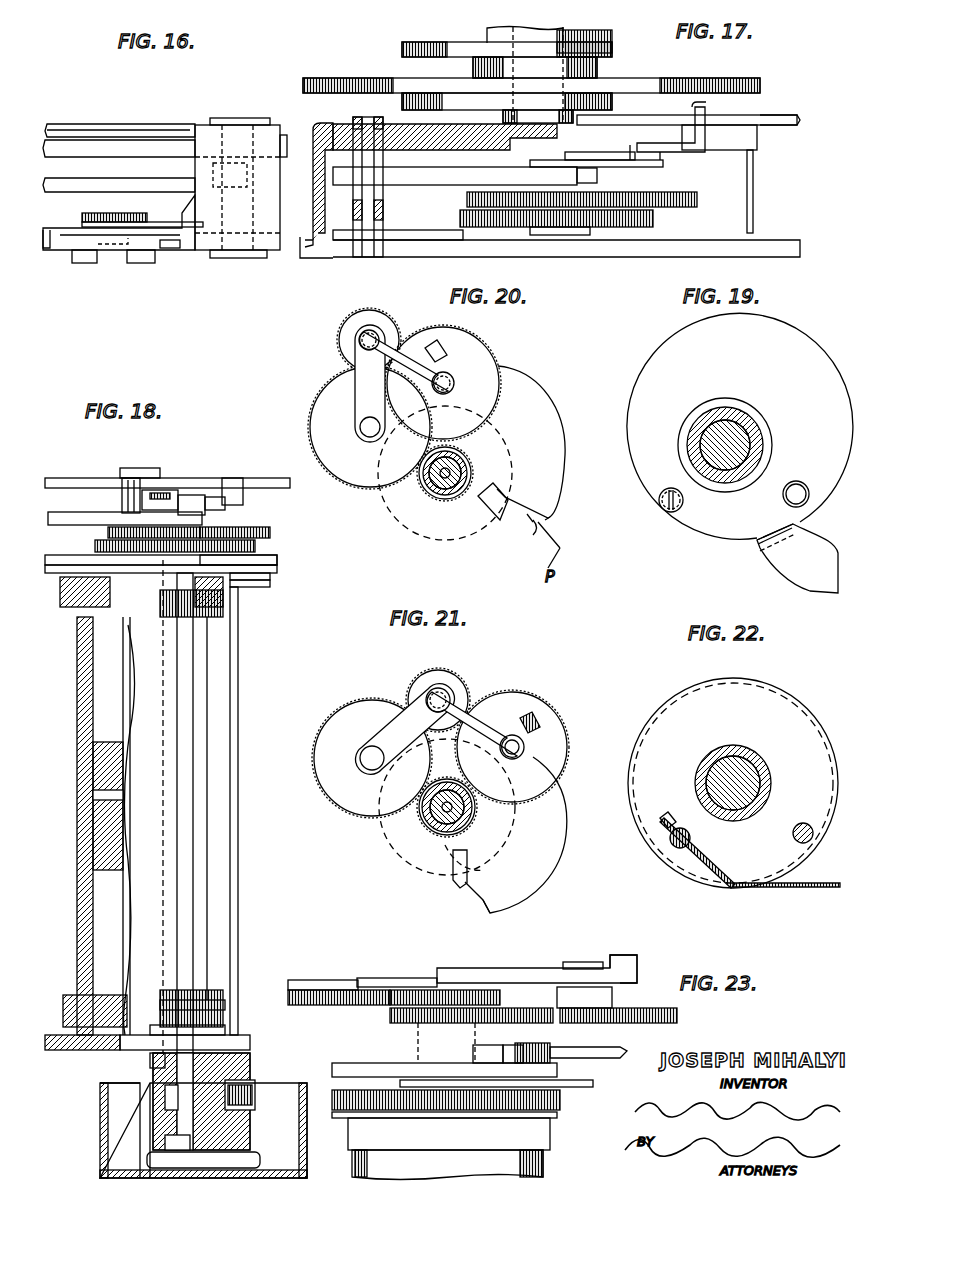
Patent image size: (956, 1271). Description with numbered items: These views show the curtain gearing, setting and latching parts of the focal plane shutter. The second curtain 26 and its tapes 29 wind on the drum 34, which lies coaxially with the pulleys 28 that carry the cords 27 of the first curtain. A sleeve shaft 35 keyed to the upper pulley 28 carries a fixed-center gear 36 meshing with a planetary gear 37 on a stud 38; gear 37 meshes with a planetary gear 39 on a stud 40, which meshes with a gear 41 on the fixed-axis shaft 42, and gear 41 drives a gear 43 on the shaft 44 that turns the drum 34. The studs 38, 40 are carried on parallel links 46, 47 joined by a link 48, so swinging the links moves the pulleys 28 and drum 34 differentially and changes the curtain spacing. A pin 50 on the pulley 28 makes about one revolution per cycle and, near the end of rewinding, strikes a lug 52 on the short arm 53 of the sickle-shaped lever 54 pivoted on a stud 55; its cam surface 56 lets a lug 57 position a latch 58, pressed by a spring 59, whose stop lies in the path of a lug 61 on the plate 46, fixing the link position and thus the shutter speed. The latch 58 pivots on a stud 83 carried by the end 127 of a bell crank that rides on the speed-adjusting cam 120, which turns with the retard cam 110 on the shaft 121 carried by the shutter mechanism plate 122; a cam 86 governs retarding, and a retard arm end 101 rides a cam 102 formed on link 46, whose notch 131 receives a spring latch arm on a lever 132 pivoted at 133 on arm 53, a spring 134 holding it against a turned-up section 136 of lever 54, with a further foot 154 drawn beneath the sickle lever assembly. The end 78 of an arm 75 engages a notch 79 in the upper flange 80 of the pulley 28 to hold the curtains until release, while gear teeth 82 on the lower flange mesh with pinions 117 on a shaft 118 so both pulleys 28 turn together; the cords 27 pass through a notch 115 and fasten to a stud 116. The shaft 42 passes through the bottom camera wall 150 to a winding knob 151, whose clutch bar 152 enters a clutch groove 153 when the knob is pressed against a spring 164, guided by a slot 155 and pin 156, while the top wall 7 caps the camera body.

In FIG. 17, the top wall 7 is at (801, 247).
In FIG. 18, the second curtain 26 is at (77, 868).
In FIG. 18, the cords 27 is at (262, 587).
In FIG. 22, the cords 27 is at (822, 889).
In FIG. 23, the cords 27 is at (594, 1083).
In FIG. 20, the pulleys 28 is at (450, 541).
In FIG. 19, the pulleys 28 is at (614, 446).
In FIG. 21, the pulleys 28 is at (390, 831).
In FIG. 22, the pulleys 28 is at (645, 818).
In FIG. 23, the pulleys 28 is at (340, 1063).
In FIG. 23, the tapes 29 is at (551, 1125).
In FIG. 18, the drum 34 is at (77, 756).
In FIG. 20, the sleeve shaft 35 is at (430, 490).
In FIG. 19, the sleeve shaft 35 is at (689, 440).
In FIG. 21, the sleeve shaft 35 is at (430, 822).
In FIG. 22, the sleeve shaft 35 is at (705, 760).
In FIG. 23, the sleeve shaft 35 is at (405, 1040).
In FIG. 20, the gear 36 is at (472, 467).
In FIG. 21, the gear 36 is at (447, 807).
In FIG. 23, the gear 36 is at (390, 1015).
In FIG. 18, the planetary gear 37 is at (240, 527).
In FIG. 20, the planetary gear 37 is at (496, 358).
In FIG. 21, the planetary gear 37 is at (546, 706).
In FIG. 23, the planetary gear 37 is at (678, 1012).
In FIG. 20, the stud 38 is at (456, 379).
In FIG. 21, the stud 38 is at (525, 745).
In FIG. 23, the stud 38 is at (585, 962).
In FIG. 20, the planetary gear 39 is at (338, 350).
In FIG. 21, the planetary gear 39 is at (456, 686).
In FIG. 20, the stud 40 is at (376, 326).
In FIG. 21, the stud 40 is at (441, 688).
In FIG. 18, the gear 41 is at (257, 540).
In FIG. 20, the gear 41 is at (312, 445).
In FIG. 21, the gear 41 is at (366, 706).
In FIG. 23, the gear 41 is at (345, 1006).
In FIG. 18, the fixed-axis shaft 42 is at (251, 1063).
In FIG. 20, the fixed-axis shaft 42 is at (360, 425).
In FIG. 21, the fixed-axis shaft 42 is at (368, 748).
In FIG. 18, the gear 43 is at (108, 532).
In FIG. 23, the gear 43 is at (500, 998).
In FIG. 18, the shaft 44 is at (132, 468).
In FIG. 20, the shaft 44 is at (441, 488).
In FIG. 19, the shaft 44 is at (701, 450).
In FIG. 21, the shaft 44 is at (442, 830).
In FIG. 22, the shaft 44 is at (750, 778).
In FIG. 23, the shaft 44 is at (420, 1162).
In FIG. 16, the parallel link 46 is at (110, 183).
In FIG. 17, the parallel link 46 is at (460, 186).
In FIG. 18, the parallel link 46 is at (95, 512).
In FIG. 20, the parallel link 46 is at (531, 457).
In FIG. 21, the parallel link 46 is at (506, 835).
In FIG. 23, the parallel link 46 is at (546, 968).
In FIG. 20, the parallel link 47 is at (352, 375).
In FIG. 21, the parallel link 47 is at (396, 716).
In FIG. 20, the link 48 is at (406, 350).
In FIG. 21, the link 48 is at (497, 718).
In FIG. 23, the link 48 is at (530, 970).
In FIG. 19, the pin 50 is at (798, 482).
In FIG. 22, the pin 50 is at (812, 840).
In FIG. 23, the pin 50 is at (552, 1048).
In FIG. 16, the lug 52 is at (84, 264).
In FIG. 16, the short arm 53 is at (166, 249).
In FIG. 17, the short arm 53 is at (437, 240).
In FIG. 16, the sickle-shaped lever 54 is at (117, 125).
In FIG. 17, the sickle-shaped lever 54 is at (770, 117).
In FIG. 18, the sickle-shaped lever 54 is at (88, 478).
In FIG. 16, the stud 55 is at (237, 259).
In FIG. 17, the stud 55 is at (368, 240).
In FIG. 17, the cam surface 56 is at (801, 120).
In FIG. 17, the lug 57 is at (707, 110).
In FIG. 18, the lug 57 is at (233, 478).
In FIG. 17, the latch 58 is at (676, 153).
In FIG. 18, the latch 58 is at (212, 497).
In FIG. 17, the spring 59 is at (640, 168).
In FIG. 17, the lug 61 is at (614, 180).
In FIG. 18, the lug 61 is at (190, 497).
In FIG. 20, the lug 61 is at (446, 348).
In FIG. 21, the lug 61 is at (541, 722).
In FIG. 23, the lug 61 is at (630, 957).
In FIG. 19, the arm 75 is at (815, 590).
In FIG. 23, the arm 75 is at (627, 1050).
In FIG. 19, the end 78 is at (770, 552).
In FIG. 23, the end 78 is at (498, 1050).
In FIG. 19, the notch 79 is at (801, 523).
In FIG. 23, the notch 79 is at (515, 1050).
In FIG. 18, the upper flange 80 is at (246, 580).
In FIG. 22, the upper flange 80 is at (661, 720).
In FIG. 18, the gear teeth 82 is at (225, 600).
In FIG. 18, the stud 83 is at (165, 490).
In FIG. 17, the cam 86 is at (459, 44).
In FIG. 20, the end 101 is at (527, 523).
In FIG. 20, the cam 102 is at (546, 518).
In FIG. 21, the cam 102 is at (487, 912).
In FIG. 17, the retard cam 110 is at (660, 78).
In FIG. 22, the notch 115 is at (726, 888).
In FIG. 19, the stud 116 is at (672, 512).
In FIG. 22, the stud 116 is at (676, 848).
In FIG. 18, the pinions 117 is at (212, 612).
In FIG. 18, the shaft 118 is at (185, 710).
In FIG. 17, the speed-adjusting cam 120 is at (613, 100).
In FIG. 17, the shaft 121 is at (566, 35).
In FIG. 16, the shutter mechanism plate 122 is at (119, 147).
In FIG. 17, the shutter mechanism plate 122 is at (751, 140).
In FIG. 18, the shutter mechanism plate 122 is at (278, 557).
In FIG. 17, the end 127 is at (545, 140).
In FIG. 20, the notch 131 is at (492, 511).
In FIG. 21, the notch 131 is at (460, 872).
In FIG. 16, the lever 132 is at (62, 240).
In FIG. 16, the pivot 133 is at (116, 214).
In FIG. 16, the spring 134 is at (68, 227).
In FIG. 16, the turned-up section 136 is at (273, 181).
In FIG. 18, the bottom camera wall 150 is at (92, 1050).
In FIG. 18, the winding knob 151 is at (100, 1140).
In FIG. 18, the clutch bar 152 is at (147, 1158).
In FIG. 18, the clutch groove 153 is at (175, 1140).
In FIG. 16, the foot 154 is at (137, 264).
In FIG. 18, the slot 155 is at (165, 1097).
In FIG. 18, the pin 156 is at (246, 1105).
In FIG. 18, the spring 164 is at (155, 1062).